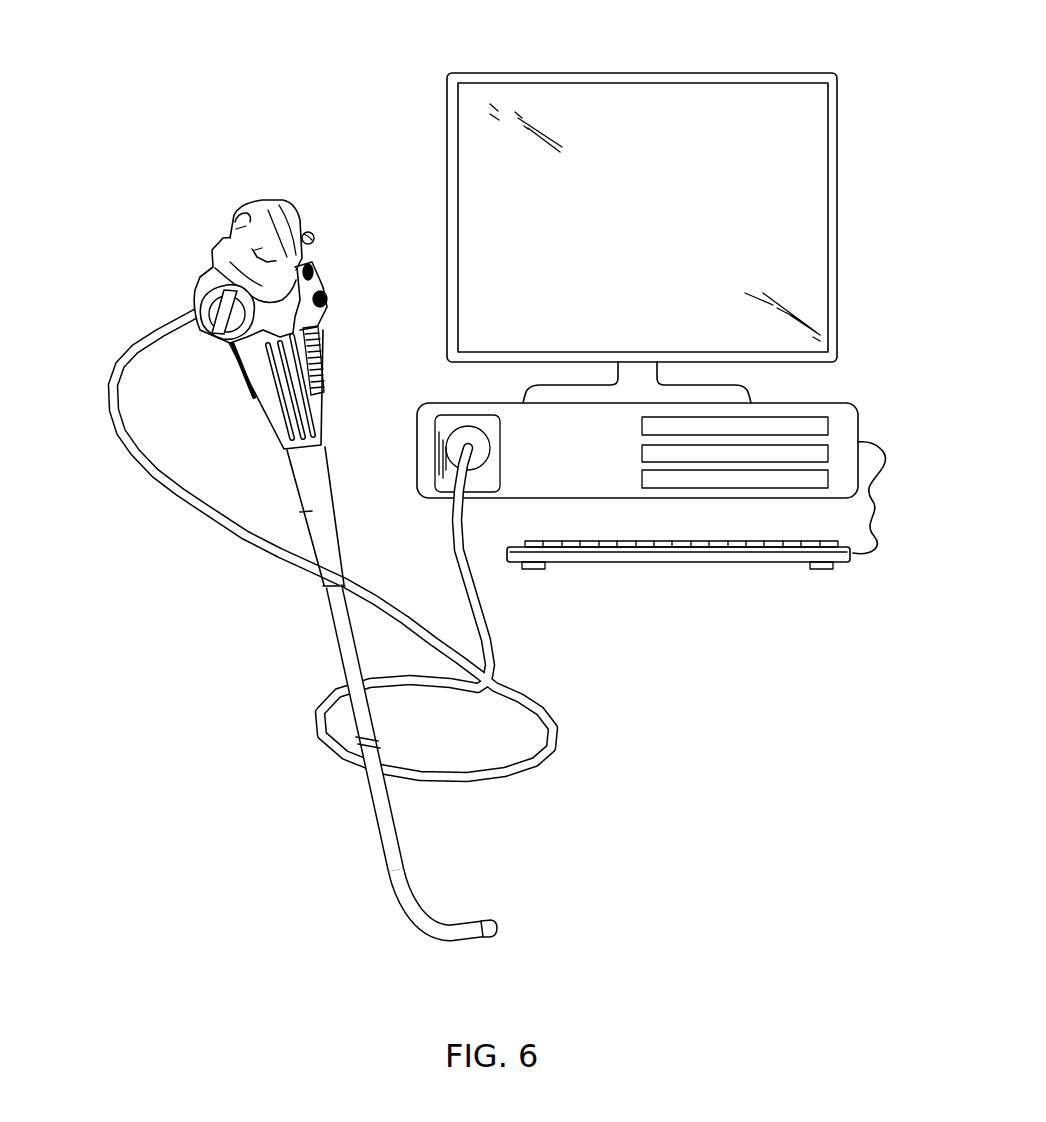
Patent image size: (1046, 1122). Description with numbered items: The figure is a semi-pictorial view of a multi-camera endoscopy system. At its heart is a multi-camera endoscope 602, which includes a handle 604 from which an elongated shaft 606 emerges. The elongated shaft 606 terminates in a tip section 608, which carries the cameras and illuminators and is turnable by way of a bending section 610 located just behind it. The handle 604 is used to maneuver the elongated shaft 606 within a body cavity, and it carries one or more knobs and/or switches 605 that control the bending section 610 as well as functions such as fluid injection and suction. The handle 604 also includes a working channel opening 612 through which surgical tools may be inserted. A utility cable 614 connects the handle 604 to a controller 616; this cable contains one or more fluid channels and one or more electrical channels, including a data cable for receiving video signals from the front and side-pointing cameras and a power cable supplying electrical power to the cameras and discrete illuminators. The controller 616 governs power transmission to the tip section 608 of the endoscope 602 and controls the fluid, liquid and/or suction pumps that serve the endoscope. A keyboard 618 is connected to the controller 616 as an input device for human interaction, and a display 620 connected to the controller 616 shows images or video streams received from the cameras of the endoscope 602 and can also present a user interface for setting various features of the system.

The multi-camera endoscope 602 is at (198, 223).
The handle 604 is at (297, 200).
The knobs and/or switches 605 is at (318, 218).
The elongated shaft 606 is at (385, 858).
The tip section 608 is at (483, 923).
The bending section 610 is at (465, 968).
The working channel opening 612 is at (235, 212).
The utility cable 614 is at (228, 531).
The controller 616 is at (417, 403).
The keyboard 618 is at (680, 563).
The display 620 is at (622, 72).